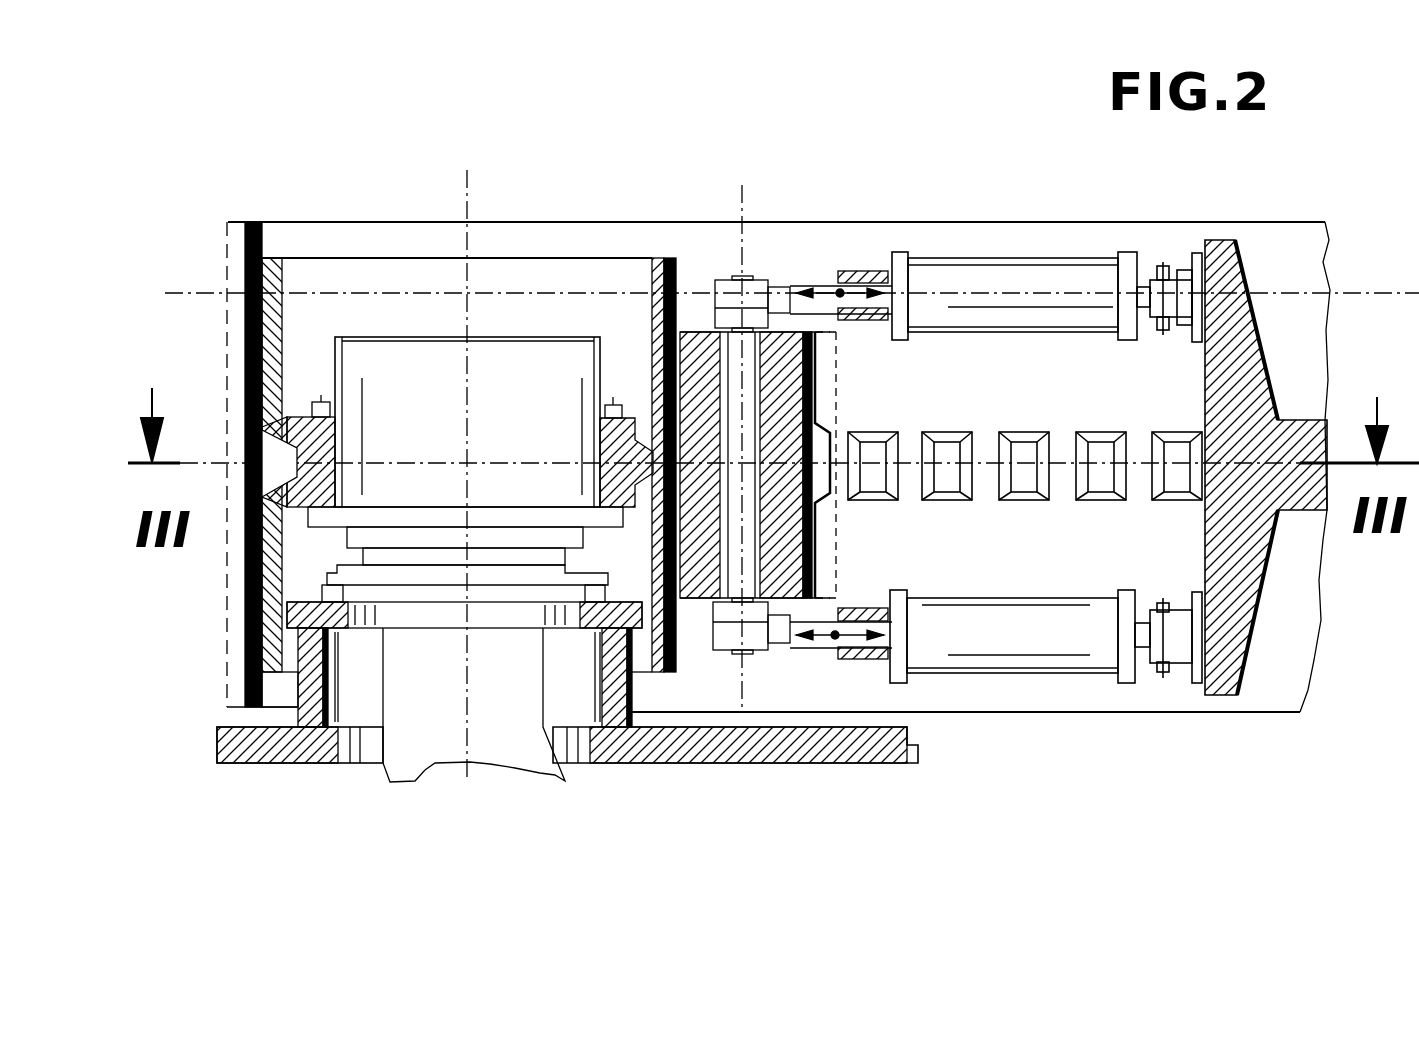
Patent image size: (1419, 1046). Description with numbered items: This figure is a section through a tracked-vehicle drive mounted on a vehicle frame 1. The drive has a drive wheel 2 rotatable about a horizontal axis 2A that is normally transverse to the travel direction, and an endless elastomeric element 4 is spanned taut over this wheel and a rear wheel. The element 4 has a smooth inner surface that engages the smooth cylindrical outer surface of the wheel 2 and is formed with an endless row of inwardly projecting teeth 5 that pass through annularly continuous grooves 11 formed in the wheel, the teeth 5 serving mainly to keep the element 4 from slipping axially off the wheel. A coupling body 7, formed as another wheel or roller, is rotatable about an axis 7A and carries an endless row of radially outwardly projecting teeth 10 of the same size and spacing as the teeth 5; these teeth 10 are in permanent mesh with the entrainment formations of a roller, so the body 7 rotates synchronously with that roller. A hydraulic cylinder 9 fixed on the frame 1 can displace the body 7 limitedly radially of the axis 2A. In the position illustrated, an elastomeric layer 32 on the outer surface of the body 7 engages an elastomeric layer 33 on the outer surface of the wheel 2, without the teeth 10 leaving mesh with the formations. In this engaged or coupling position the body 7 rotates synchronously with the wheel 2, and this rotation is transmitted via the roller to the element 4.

The vehicle frame 1 is at (1233, 607).
The drive wheel 2 is at (317, 277).
The horizontal axis 2A is at (467, 197).
The endless elastomeric element 4 is at (245, 245).
The teeth 5 is at (267, 472).
The coupling body 7 is at (780, 325).
The axis 7A is at (740, 220).
The hydraulic cylinder 9 is at (1017, 282).
The teeth 10 is at (817, 593).
The grooves 11 is at (635, 400).
The elastomeric layer 32 is at (805, 407).
The elastomeric layer 33 is at (673, 260).